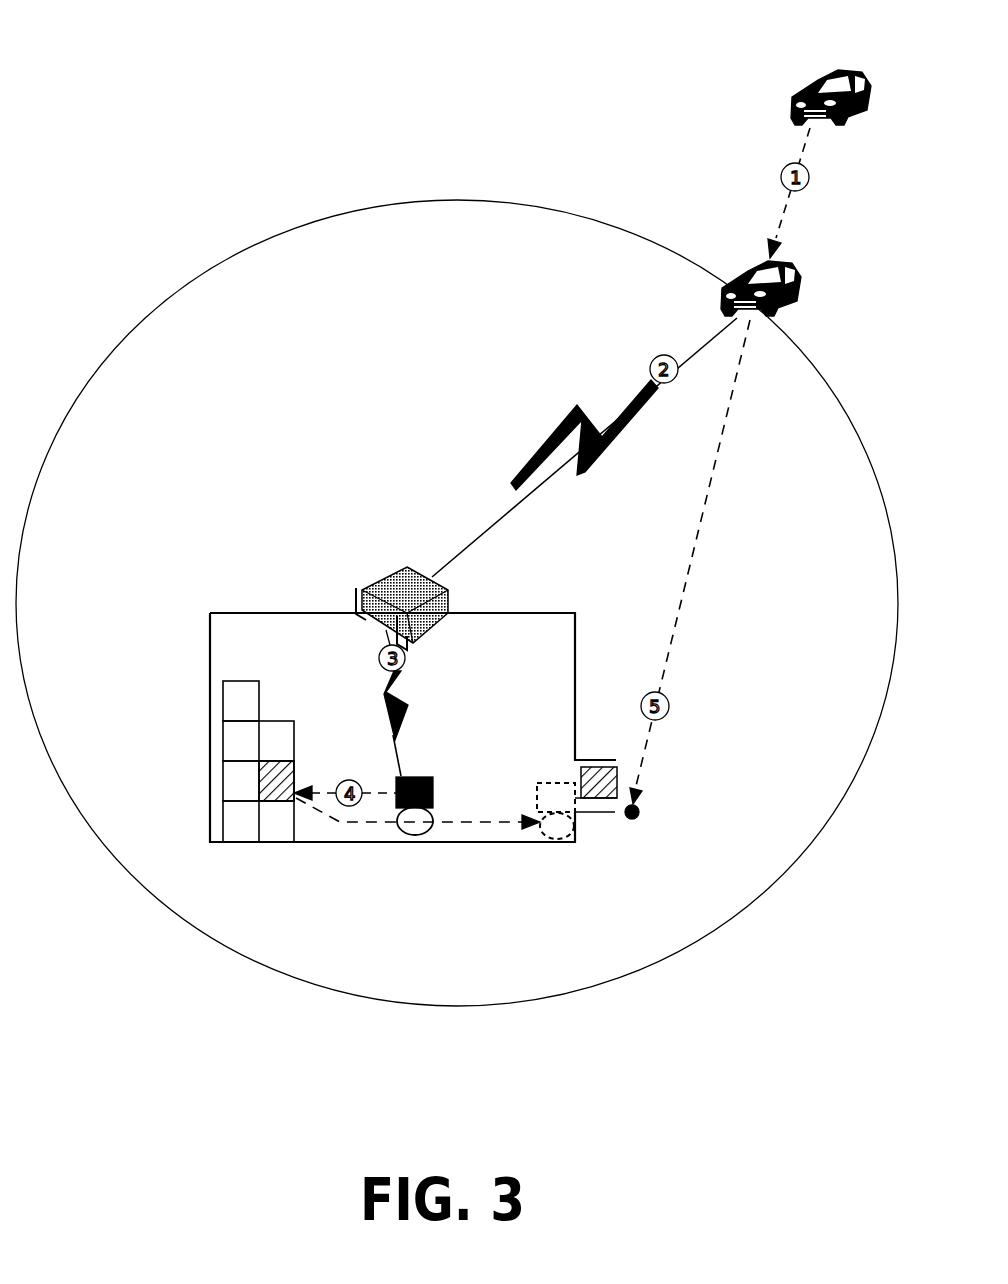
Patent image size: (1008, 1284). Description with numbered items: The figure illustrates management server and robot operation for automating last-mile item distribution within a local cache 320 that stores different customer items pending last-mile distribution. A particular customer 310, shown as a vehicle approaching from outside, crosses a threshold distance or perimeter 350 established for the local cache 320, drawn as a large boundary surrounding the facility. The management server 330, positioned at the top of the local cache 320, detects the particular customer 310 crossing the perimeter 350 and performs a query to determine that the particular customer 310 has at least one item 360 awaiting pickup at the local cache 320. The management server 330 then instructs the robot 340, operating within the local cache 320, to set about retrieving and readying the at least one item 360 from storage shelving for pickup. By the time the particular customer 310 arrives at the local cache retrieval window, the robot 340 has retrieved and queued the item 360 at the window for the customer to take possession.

The particular customer 310 is at (827, 72).
The local cache 320 is at (210, 613).
The management server 330 is at (392, 588).
The robot 340 is at (432, 778).
The threshold distance or perimeter 350 is at (188, 276).
The item 360 is at (295, 765).